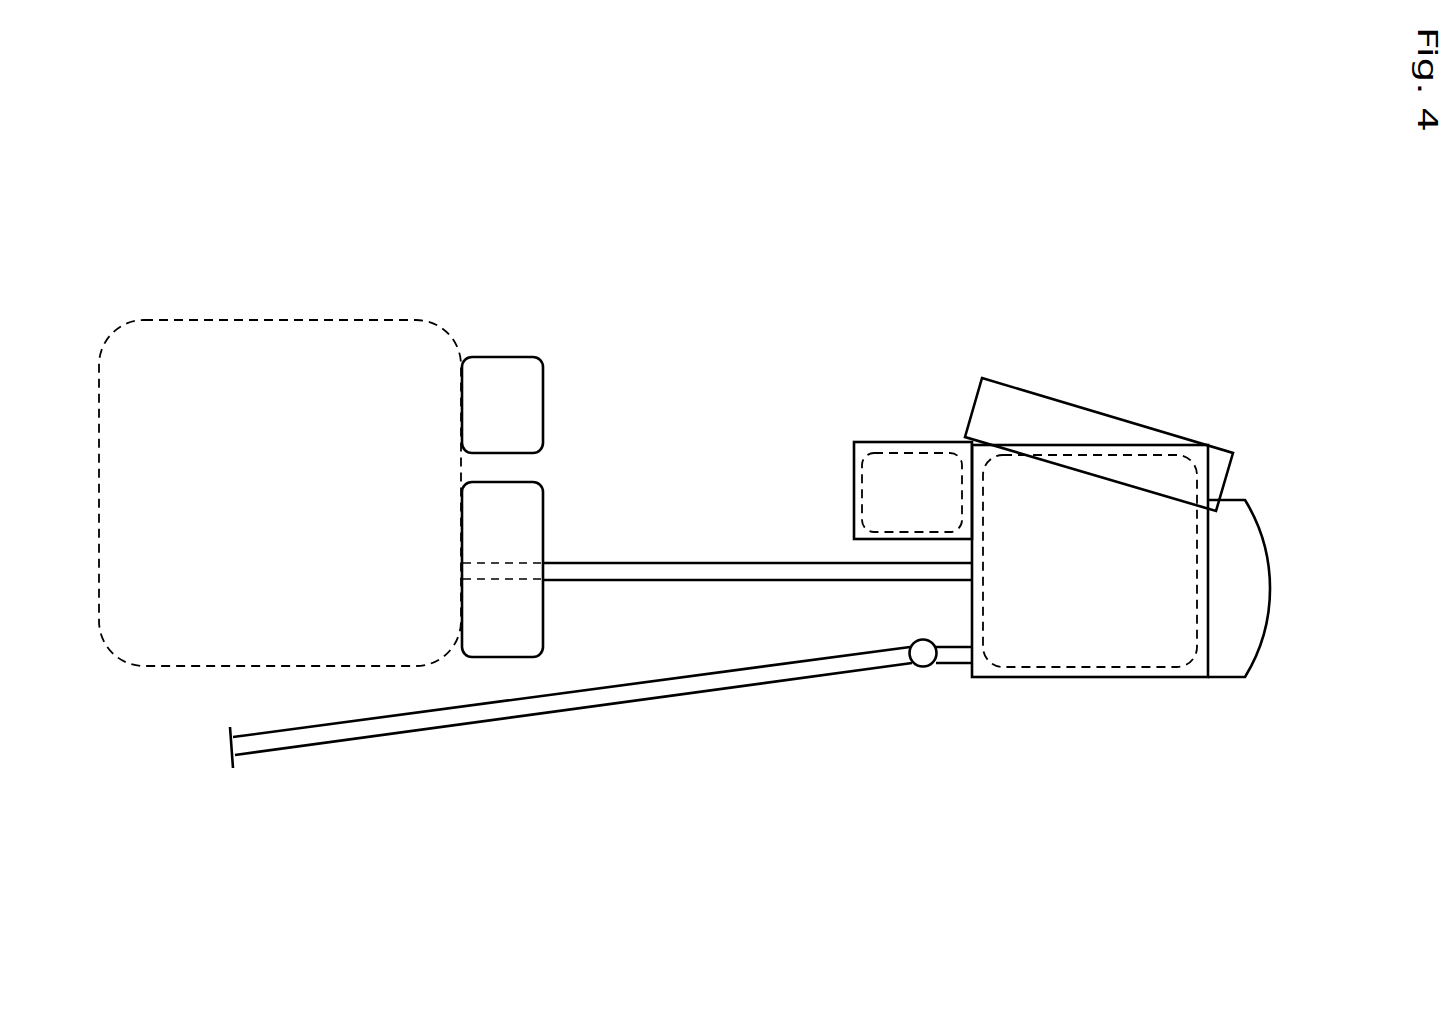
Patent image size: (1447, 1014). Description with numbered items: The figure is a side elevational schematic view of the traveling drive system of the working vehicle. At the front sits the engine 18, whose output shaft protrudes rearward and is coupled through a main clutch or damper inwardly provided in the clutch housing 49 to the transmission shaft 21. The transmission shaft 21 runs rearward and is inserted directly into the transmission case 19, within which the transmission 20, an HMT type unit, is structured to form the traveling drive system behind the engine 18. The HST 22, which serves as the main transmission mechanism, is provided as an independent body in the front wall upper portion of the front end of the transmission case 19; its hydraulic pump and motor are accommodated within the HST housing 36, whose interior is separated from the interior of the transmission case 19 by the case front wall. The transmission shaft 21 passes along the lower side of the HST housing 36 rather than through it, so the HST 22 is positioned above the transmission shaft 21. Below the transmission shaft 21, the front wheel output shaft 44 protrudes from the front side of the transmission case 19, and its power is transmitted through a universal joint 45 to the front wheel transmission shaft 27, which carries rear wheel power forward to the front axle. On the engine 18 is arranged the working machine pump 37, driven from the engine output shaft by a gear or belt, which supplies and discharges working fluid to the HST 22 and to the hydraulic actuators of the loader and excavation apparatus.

The engine 18 is at (323, 320).
The working machine pump 37 is at (525, 357).
The clutch housing 49 is at (543, 543).
The transmission shaft 21 is at (655, 562).
The HST housing 36 is at (853, 462).
The HST 22 is at (900, 452).
The transmission case 19 is at (1153, 677).
The transmission 20 is at (969, 374).
The front wheel transmission shaft 27 is at (697, 695).
The universal joint 45 is at (910, 667).
The front wheel output shaft 44 is at (962, 663).